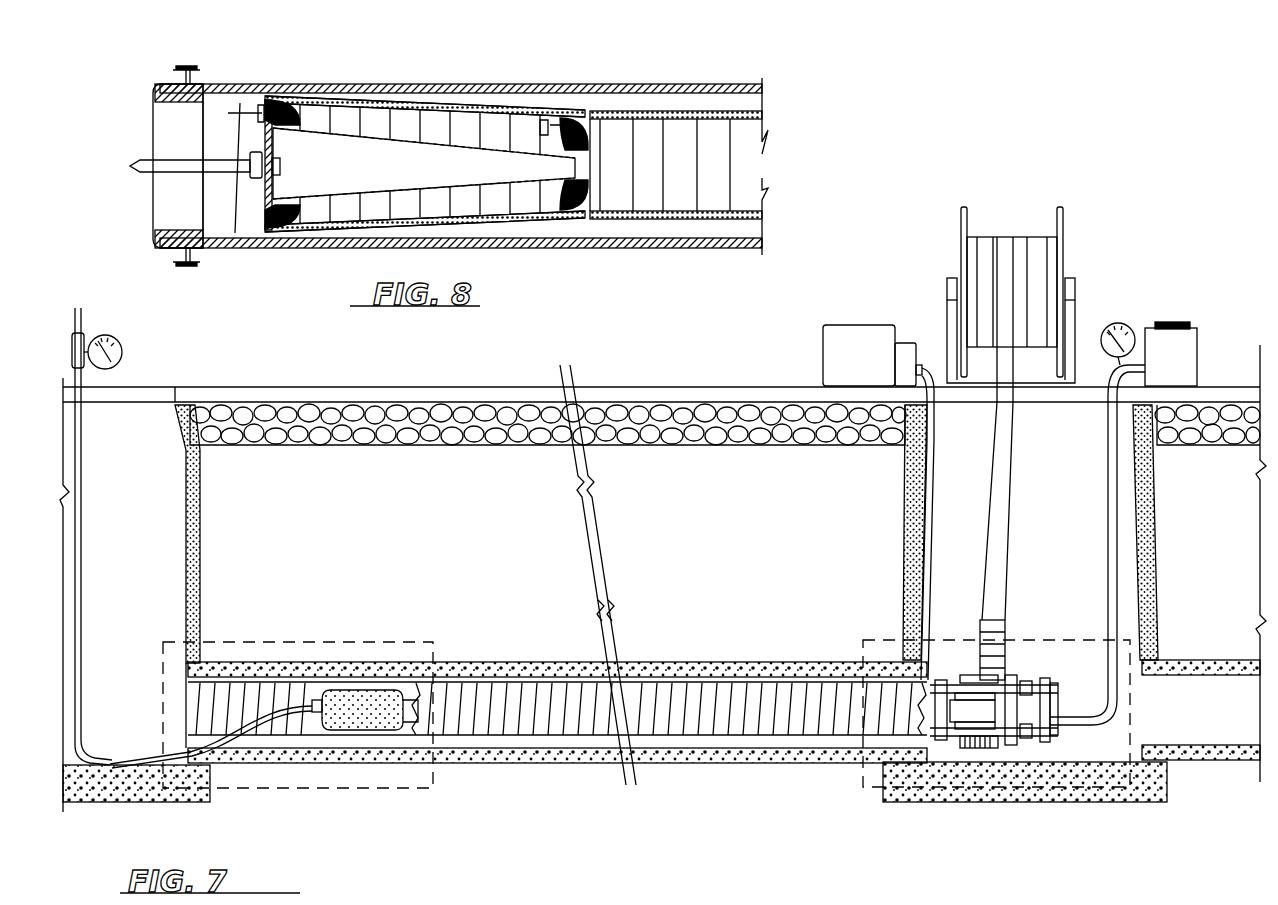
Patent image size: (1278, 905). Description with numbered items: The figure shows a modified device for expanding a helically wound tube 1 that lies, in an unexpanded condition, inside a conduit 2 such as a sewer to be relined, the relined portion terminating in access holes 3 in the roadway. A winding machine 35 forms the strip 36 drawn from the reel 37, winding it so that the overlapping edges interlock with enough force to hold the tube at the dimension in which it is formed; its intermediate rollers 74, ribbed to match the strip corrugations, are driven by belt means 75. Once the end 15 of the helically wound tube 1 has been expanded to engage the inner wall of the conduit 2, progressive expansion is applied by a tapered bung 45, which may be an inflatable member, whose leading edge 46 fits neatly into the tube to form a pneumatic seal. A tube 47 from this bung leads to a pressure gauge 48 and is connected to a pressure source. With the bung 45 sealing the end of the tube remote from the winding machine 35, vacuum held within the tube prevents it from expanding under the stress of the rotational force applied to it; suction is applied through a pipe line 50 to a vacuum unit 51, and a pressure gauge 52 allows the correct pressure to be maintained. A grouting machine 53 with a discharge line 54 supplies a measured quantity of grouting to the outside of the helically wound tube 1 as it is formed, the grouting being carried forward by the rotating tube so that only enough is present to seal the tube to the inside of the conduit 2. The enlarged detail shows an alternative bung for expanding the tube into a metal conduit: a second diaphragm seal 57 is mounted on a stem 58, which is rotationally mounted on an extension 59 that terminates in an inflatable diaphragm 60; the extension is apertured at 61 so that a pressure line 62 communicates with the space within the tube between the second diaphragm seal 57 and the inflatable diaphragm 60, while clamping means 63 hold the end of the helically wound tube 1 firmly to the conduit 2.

In FIG. 8, the helically wound tube 1 is at (650, 115).
In FIG. 7, the helically wound tube 1 is at (755, 700).
In FIG. 8, the conduit 2 is at (708, 95).
In FIG. 7, the conduit 2 is at (708, 672).
In FIG. 7, the access holes 3 is at (136, 524).
In FIG. 8, the end of the helically wound tube 15 is at (160, 100).
In FIG. 7, the end of the helically wound tube 15 is at (186, 677).
In FIG. 7, the winding machine 35 is at (1022, 665).
In FIG. 7, the strip 36 is at (1000, 412).
In FIG. 7, the reel 37 is at (1063, 262).
In FIG. 8, the tapered bung 45 is at (557, 257).
In FIG. 7, the tapered bung 45 is at (348, 735).
In FIG. 7, the leading edge of the bung 46 is at (410, 735).
In FIG. 7, the tube from the bung 47 is at (84, 465).
In FIG. 7, the pressure gauge 48 is at (123, 350).
In FIG. 7, the pipe line 50 is at (1108, 515).
In FIG. 7, the vacuum unit 51 is at (1192, 345).
In FIG. 7, the pressure gauge 52 is at (1125, 312).
In FIG. 7, the grouting machine 53 is at (828, 357).
In FIG. 7, the discharge line 54 is at (934, 512).
In FIG. 8, the second diaphragm seal 57 is at (575, 118).
In FIG. 8, the stem 58 is at (487, 150).
In FIG. 8, the extension of the stem 59 is at (350, 235).
In FIG. 8, the inflatable diaphragm 60 is at (295, 238).
In FIG. 8, the aperture 61 is at (400, 168).
In FIG. 8, the pressure line 62 is at (190, 183).
In FIG. 8, the clamping means 63 is at (155, 92).
In FIG. 7, the intermediate rollers 74 is at (945, 680).
In FIG. 7, the belt means 75 is at (1052, 693).